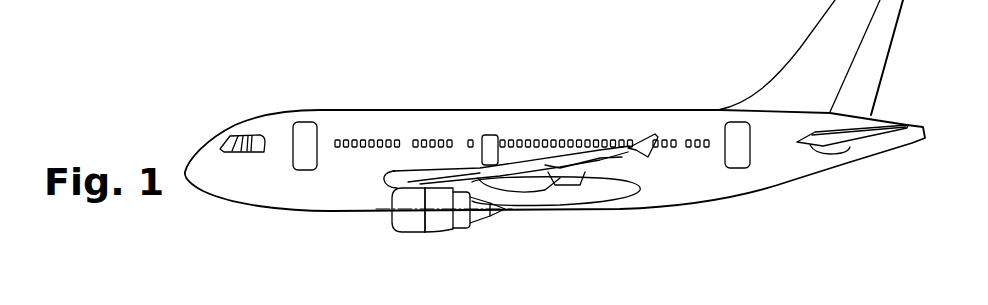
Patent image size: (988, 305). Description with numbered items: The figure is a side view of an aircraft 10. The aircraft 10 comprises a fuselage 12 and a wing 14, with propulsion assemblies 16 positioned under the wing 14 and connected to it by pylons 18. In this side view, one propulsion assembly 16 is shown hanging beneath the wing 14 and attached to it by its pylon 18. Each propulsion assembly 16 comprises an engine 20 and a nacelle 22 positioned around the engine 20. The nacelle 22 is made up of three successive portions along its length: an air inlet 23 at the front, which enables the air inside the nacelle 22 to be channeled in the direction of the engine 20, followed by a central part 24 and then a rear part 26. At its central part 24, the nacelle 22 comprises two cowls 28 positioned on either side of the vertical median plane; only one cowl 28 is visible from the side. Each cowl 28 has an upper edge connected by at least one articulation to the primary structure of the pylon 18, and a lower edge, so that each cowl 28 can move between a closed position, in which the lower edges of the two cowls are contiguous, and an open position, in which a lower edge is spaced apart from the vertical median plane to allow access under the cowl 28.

The aircraft 10 is at (374, 79).
The fuselage 12 is at (608, 108).
The wing 14 is at (523, 168).
The propulsion assembly 16 is at (398, 221).
The pylon 18 is at (500, 189).
The engine 20 is at (498, 213).
The nacelle 22 is at (437, 186).
The air inlet 23 is at (424, 234).
The central part 24 is at (457, 234).
The rear part 26 is at (458, 222).
The cowl 28 is at (450, 204).